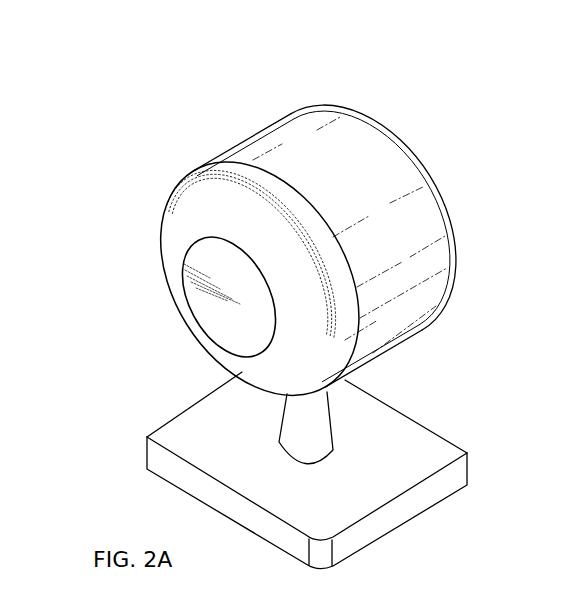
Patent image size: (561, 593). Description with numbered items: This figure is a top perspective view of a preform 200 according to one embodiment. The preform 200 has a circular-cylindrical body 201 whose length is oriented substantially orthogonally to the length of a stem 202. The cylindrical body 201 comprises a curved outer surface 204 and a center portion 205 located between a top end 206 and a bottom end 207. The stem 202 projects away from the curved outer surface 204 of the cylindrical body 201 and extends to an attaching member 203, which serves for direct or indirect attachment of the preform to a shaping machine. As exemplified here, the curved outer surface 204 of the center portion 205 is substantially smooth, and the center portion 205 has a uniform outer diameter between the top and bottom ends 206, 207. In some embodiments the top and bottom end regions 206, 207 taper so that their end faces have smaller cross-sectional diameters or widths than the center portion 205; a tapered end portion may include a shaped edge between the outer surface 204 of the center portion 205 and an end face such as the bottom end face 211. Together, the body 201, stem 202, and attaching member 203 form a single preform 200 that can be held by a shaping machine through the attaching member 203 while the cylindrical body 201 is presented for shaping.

The preform 200 is at (163, 137).
The circular-cylindrical body 201 is at (340, 107).
The stem 202 is at (327, 410).
The attaching member 203 is at (221, 447).
The curved outer surface 204 is at (410, 250).
The center portion 205 is at (276, 147).
The top end 206 is at (193, 217).
The bottom end 207 is at (407, 143).
The bottom end face 211 is at (205, 275).